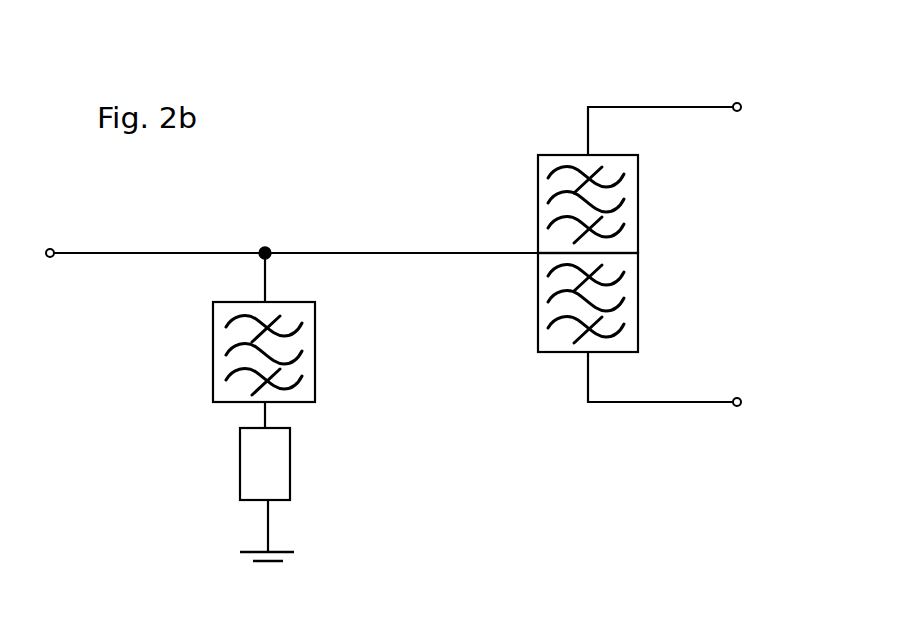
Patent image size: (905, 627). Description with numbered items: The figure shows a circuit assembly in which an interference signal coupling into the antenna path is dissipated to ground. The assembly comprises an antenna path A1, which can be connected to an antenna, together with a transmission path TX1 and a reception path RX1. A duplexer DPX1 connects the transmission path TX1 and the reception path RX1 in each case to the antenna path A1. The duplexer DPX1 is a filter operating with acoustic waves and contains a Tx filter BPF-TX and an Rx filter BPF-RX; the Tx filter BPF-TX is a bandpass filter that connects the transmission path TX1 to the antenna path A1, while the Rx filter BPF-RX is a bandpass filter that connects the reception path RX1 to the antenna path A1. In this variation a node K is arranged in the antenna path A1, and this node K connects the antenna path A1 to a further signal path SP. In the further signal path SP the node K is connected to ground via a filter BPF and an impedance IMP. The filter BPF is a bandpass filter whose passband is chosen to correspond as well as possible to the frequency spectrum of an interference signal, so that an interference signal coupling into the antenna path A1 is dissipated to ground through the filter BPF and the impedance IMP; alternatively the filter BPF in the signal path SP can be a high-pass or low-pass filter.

The antenna path A1 is at (372, 254).
The node K is at (266, 250).
The further signal path SP is at (265, 276).
The filter BPF is at (228, 360).
The impedance IMP is at (268, 480).
The duplexer DPX1 is at (671, 249).
The Tx filter BPF-TX is at (638, 205).
The Rx filter BPF-RX is at (676, 250).
The transmission path TX1 is at (640, 107).
The reception path RX1 is at (660, 402).